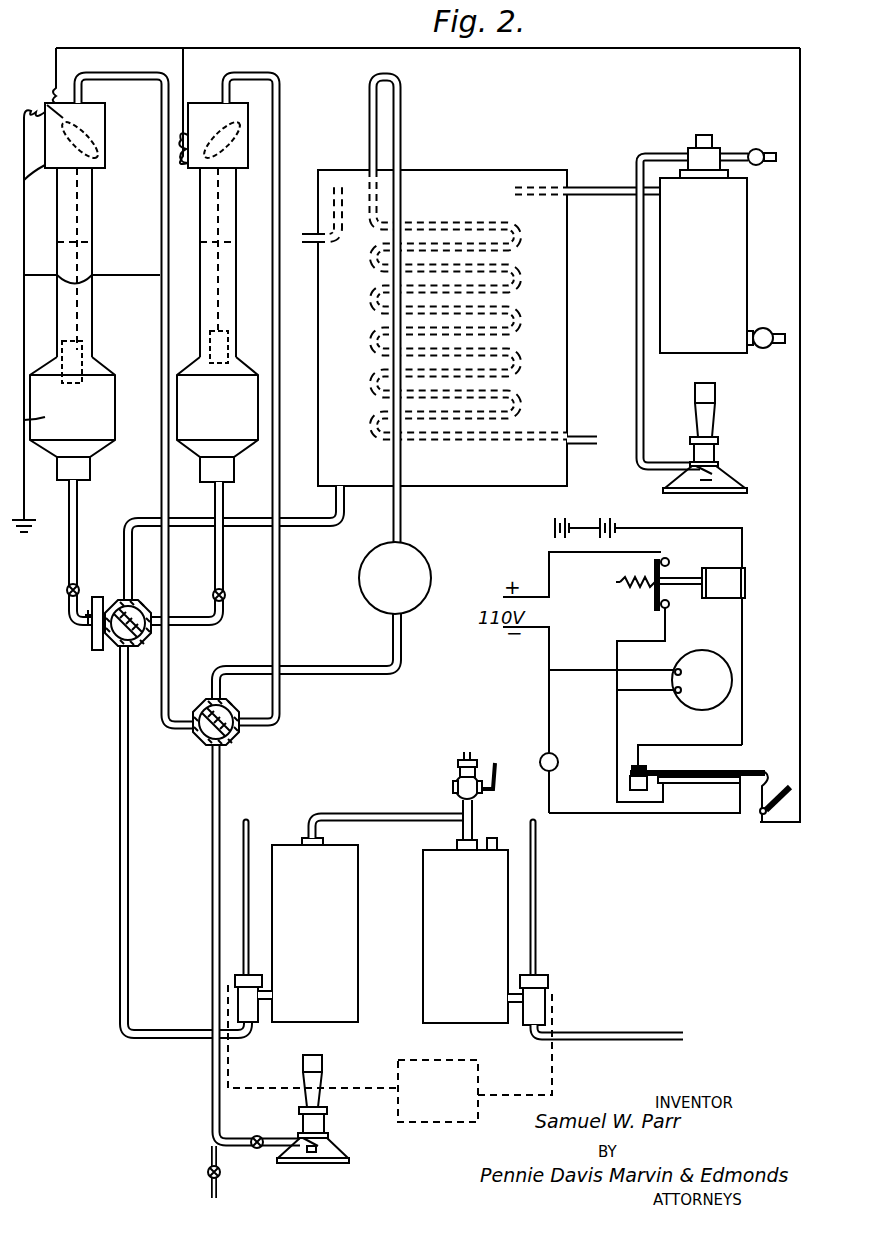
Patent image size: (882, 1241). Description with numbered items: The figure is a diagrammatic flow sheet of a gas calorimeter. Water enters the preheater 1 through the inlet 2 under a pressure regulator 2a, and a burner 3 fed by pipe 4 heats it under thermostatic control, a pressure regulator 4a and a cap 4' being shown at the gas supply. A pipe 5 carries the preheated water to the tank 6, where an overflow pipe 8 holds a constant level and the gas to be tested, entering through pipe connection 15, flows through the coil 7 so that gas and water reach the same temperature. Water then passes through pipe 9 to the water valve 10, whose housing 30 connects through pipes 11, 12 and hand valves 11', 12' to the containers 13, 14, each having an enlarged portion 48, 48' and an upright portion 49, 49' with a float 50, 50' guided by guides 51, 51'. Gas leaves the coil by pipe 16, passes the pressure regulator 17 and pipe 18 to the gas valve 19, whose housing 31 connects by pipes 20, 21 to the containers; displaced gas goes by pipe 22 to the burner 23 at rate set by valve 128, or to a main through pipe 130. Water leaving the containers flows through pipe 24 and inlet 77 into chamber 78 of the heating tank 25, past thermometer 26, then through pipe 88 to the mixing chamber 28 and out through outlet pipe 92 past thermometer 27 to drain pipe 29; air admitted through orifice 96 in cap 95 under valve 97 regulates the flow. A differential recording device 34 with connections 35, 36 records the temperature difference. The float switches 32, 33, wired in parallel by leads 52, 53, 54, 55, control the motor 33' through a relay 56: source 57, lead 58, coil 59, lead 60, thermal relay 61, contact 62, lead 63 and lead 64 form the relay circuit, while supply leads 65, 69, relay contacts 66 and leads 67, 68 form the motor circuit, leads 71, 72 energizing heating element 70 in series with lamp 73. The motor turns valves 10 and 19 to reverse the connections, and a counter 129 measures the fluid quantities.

The water preheater 1 is at (747, 224).
The water inlet 2 is at (778, 329).
The pressure regulator 2a is at (760, 349).
The burner 3 is at (712, 416).
The pipe 4 is at (672, 311).
The filler cap 4' is at (713, 146).
The pressure regulator 4a is at (760, 150).
The pipe 5 is at (592, 186).
The tank 6 is at (476, 178).
The coil 7 is at (512, 396).
The overflow pipe 8 is at (305, 236).
The pipe 9 is at (298, 530).
The water valve 10 is at (110, 592).
The pipe 11 is at (65, 550).
The hand operated valve 11' is at (49, 602).
The pipe 12 is at (204, 551).
The hand operated valve 12' is at (240, 597).
The container 13 is at (95, 452).
The container 14 is at (236, 456).
The pipe connection 15 is at (589, 432).
The pipe 16 is at (401, 514).
The pressure regulator 17 is at (420, 576).
The pipe 18 is at (330, 666).
The gas valve 19 is at (198, 696).
The pipe 20 is at (160, 345).
The pipe 21 is at (282, 310).
The pipe 22 is at (212, 852).
The burner 23 is at (318, 1084).
The pipe 24 is at (119, 780).
The heating tank 25 is at (350, 926).
The thermometer 26 is at (243, 928).
The thermometer 27 is at (538, 936).
The mixing chamber 28 is at (472, 1016).
The pipe 29 is at (608, 1034).
The valve housing 30 is at (136, 604).
The valve housing 31 is at (234, 740).
The float switch 32 is at (220, 123).
The float switch 33 is at (85, 123).
The motor 33' is at (702, 665).
The differential recording device 34 is at (421, 1060).
The connection 35 is at (263, 1088).
The connection 36 is at (494, 1094).
The enlarged portion 48 is at (88, 407).
The enlarged portion 48' is at (224, 395).
The upright portion 49 is at (93, 262).
The upright portion 49' is at (235, 262).
The float 50 is at (46, 352).
The float 50' is at (242, 323).
The guide 51 is at (95, 259).
The guide 51' is at (235, 249).
The lead 52 is at (128, 47).
The lead 53 is at (42, 321).
The lead 54 is at (183, 60).
The lead 55 is at (117, 275).
The relay 56 is at (684, 576).
The source of current 57 is at (614, 518).
The lead 58 is at (672, 528).
The coil 59 is at (742, 584).
The lead 60 is at (742, 737).
The thermal relay 61 is at (704, 772).
The contact 62 is at (768, 782).
The lead 63 is at (787, 823).
The lead 64 is at (582, 508).
The supply lead 65 is at (549, 585).
The relay contacts 66 is at (654, 564).
The lead 67 is at (615, 645).
The lead 68 is at (630, 692).
The supply lead 69 is at (548, 650).
The heating element 70 is at (690, 784).
The lead 71 is at (615, 744).
The lead 72 is at (562, 813).
The lamp 73 is at (554, 757).
The liquid inlet 77 is at (272, 993).
The chamber 78 is at (250, 1013).
The pipe 88 is at (390, 813).
The outlet pipe 92 is at (520, 986).
The cap 95 is at (457, 763).
The orifice 96 is at (468, 756).
The valve 97 is at (475, 796).
The valve 128 is at (312, 1158).
The counter 129 is at (92, 640).
The pipe 130 is at (210, 1153).